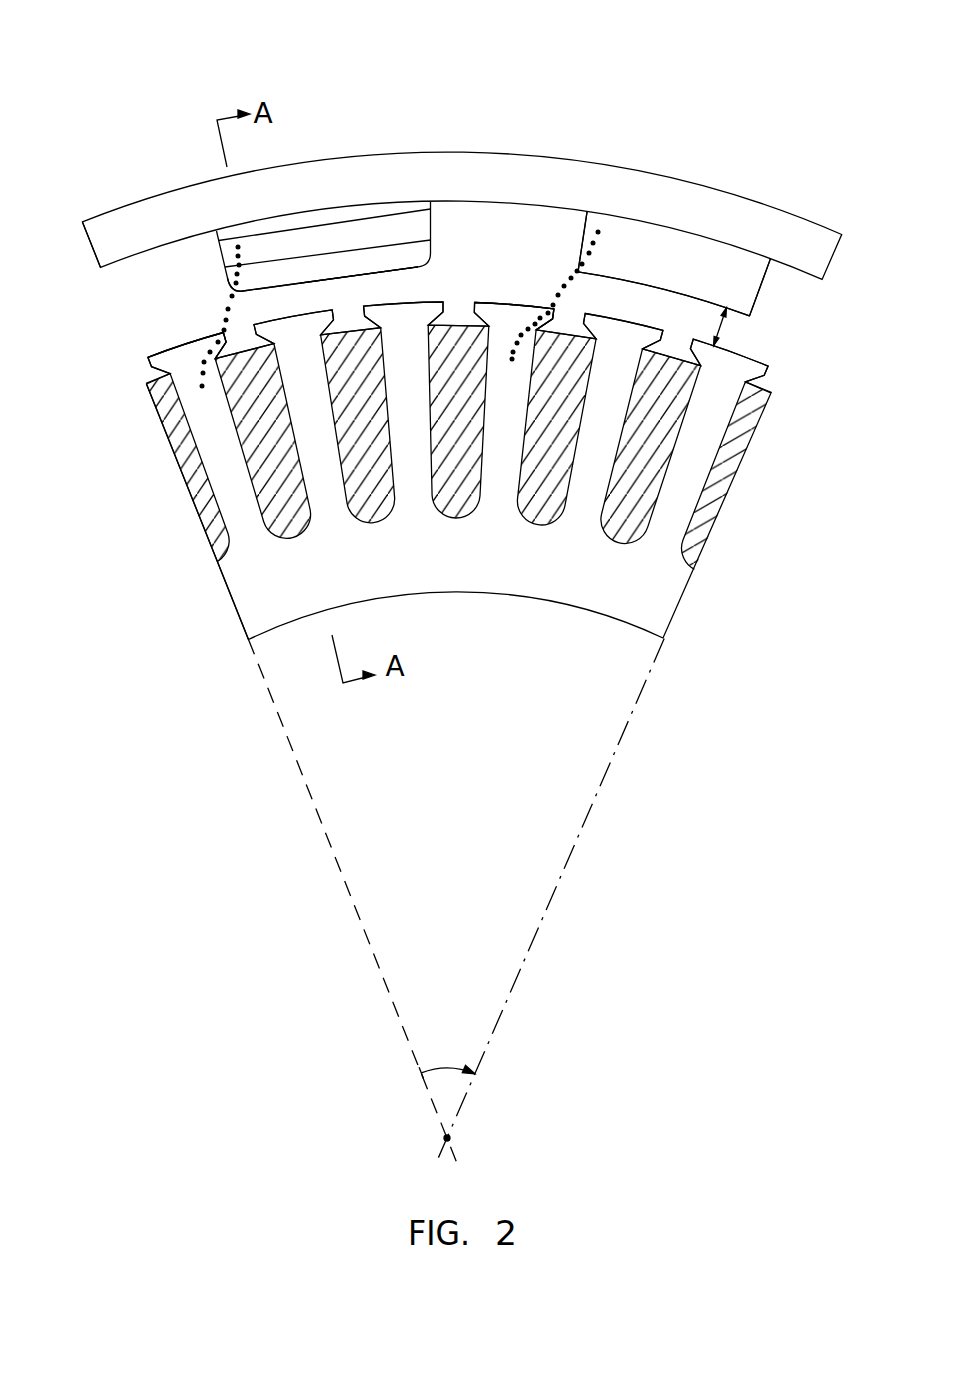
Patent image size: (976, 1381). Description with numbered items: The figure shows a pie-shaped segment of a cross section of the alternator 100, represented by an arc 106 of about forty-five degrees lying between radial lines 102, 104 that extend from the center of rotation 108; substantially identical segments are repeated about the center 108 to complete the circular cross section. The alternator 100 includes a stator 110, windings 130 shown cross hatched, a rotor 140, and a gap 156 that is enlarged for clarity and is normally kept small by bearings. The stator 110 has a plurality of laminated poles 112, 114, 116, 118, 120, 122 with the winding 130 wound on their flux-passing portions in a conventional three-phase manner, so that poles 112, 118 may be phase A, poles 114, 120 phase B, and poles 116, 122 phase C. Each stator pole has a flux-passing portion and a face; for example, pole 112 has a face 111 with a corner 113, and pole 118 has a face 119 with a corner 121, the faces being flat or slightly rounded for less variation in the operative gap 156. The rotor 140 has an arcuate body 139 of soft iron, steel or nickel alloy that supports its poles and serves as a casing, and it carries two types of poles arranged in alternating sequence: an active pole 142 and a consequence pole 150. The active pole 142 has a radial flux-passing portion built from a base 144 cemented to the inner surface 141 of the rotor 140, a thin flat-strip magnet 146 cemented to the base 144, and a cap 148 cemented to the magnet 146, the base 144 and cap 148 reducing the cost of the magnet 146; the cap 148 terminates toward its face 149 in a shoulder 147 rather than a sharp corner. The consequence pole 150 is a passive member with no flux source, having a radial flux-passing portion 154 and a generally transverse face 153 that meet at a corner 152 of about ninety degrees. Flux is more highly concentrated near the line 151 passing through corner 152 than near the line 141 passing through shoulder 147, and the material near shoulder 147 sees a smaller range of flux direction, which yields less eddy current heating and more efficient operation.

The alternator 100 is at (193, 42).
The radial line 102 is at (340, 868).
The radial line 104 is at (580, 838).
The arc 106 is at (442, 1058).
The center of rotation 108 is at (450, 1137).
The stator 110 is at (690, 592).
The face 111 is at (192, 343).
The pole 112 is at (201, 452).
The corner 113 is at (228, 328).
The pole 114 is at (296, 428).
The pole 116 is at (393, 417).
The pole 118 is at (490, 418).
The face 119 is at (494, 301).
The pole 120 is at (586, 432).
The corner 121 is at (553, 307).
The pole 122 is at (680, 459).
The windings 130 is at (162, 484).
The arcuate body 139 is at (100, 268).
The rotor 140 is at (183, 190).
The inner surface 141 is at (241, 264).
The active pole 142 is at (158, 275).
The base 144 is at (434, 205).
The magnet 146 is at (434, 232).
The shoulder 147 is at (228, 283).
The cap 148 is at (434, 257).
The magnet inner surface 149 is at (364, 272).
The consequence pole 150 is at (815, 316).
The line 151 is at (596, 243).
The corner 152 is at (576, 272).
The face 153 is at (700, 302).
The flux-passing portion 154 is at (762, 283).
The gap 156 is at (713, 332).